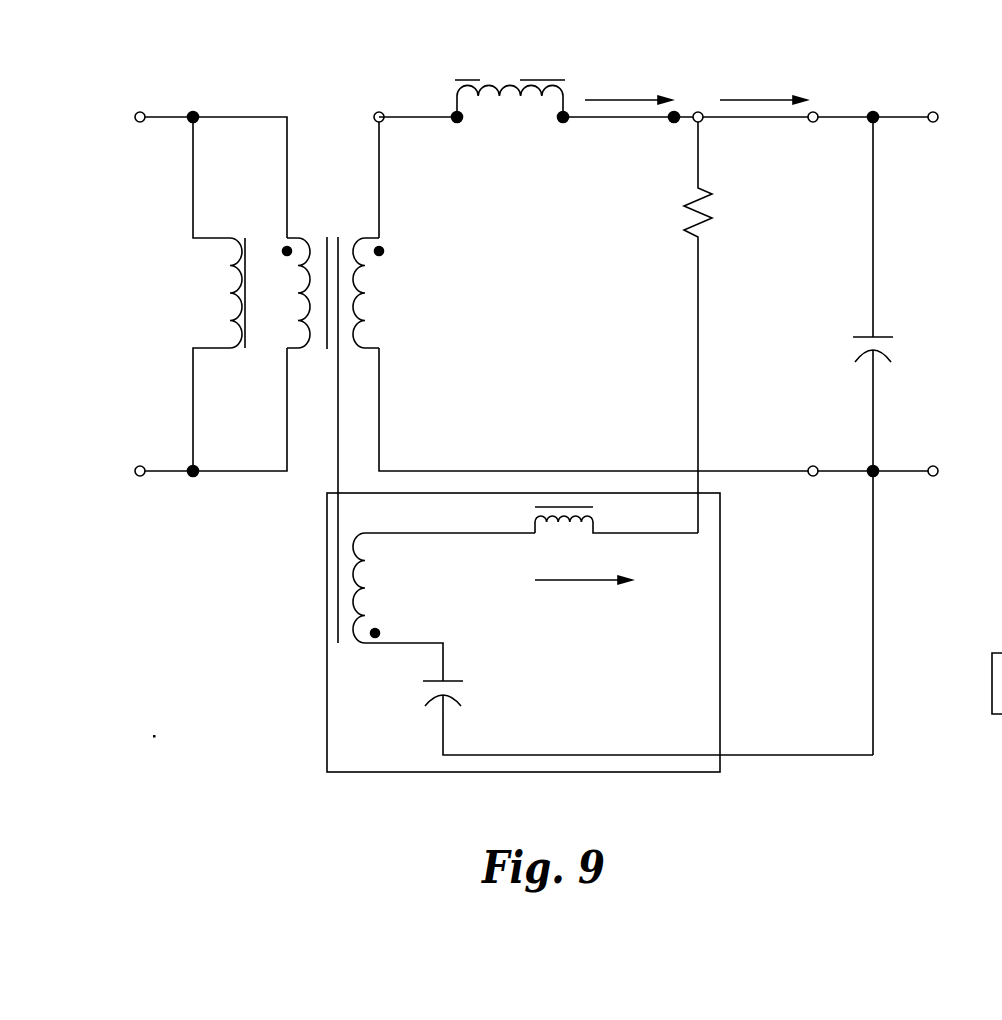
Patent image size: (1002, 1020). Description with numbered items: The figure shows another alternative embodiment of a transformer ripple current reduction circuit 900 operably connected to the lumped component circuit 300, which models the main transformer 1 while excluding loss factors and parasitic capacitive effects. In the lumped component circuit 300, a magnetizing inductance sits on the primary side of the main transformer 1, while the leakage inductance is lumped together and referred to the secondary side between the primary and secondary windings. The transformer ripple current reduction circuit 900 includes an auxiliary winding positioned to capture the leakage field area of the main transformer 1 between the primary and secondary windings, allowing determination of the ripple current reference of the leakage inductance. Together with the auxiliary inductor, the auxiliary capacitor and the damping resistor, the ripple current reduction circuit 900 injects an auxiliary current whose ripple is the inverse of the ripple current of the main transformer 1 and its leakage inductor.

The lumped component circuit 300 is at (548, 398).
The transformer ripple current reduction circuit 900 is at (837, 617).
The transformer T1 1 is at (333, 421).